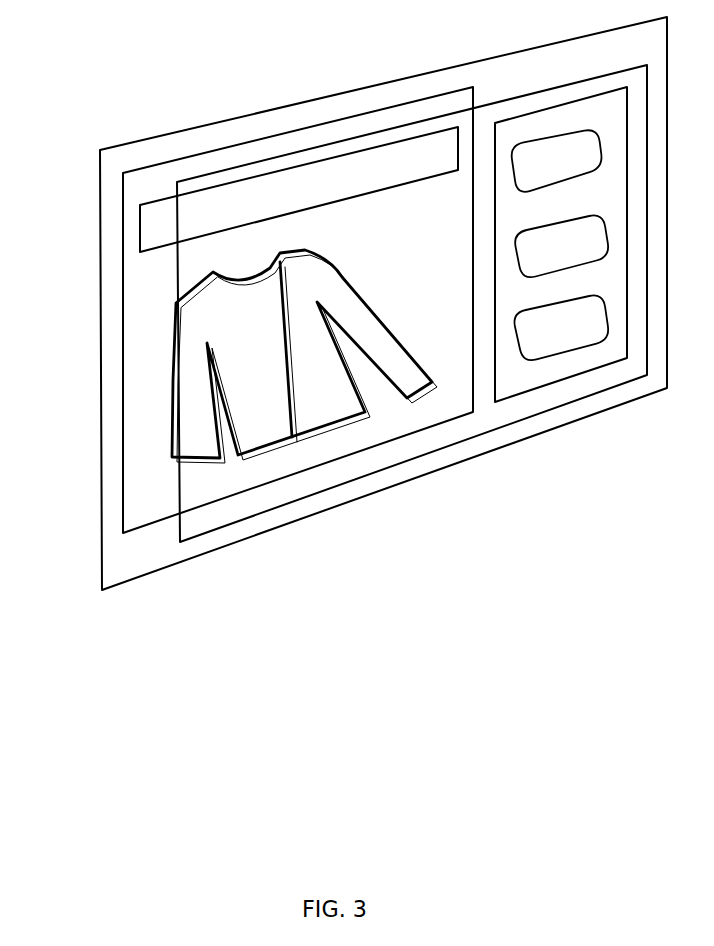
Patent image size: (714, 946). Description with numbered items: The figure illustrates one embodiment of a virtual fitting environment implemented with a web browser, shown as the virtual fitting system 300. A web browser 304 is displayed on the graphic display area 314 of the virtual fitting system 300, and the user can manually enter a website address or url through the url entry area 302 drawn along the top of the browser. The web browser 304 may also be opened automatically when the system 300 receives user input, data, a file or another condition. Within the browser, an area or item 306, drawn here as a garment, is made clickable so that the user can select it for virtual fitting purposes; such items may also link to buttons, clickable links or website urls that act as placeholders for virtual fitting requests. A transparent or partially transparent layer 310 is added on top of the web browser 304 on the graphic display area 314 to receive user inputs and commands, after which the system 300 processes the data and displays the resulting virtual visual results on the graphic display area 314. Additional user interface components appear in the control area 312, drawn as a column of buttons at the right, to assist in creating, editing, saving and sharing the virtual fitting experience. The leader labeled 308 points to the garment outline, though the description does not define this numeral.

The virtual fitting system 300 is at (232, 99).
The url entry area 302 is at (115, 222).
The web browser 304 is at (125, 288).
The clickable area or item 306 is at (173, 378).
The garment overlay outline 308 is at (293, 440).
The transparent or partially transparent layer 310 is at (393, 468).
The control area 312 is at (550, 387).
The graphic display area 314 is at (648, 395).